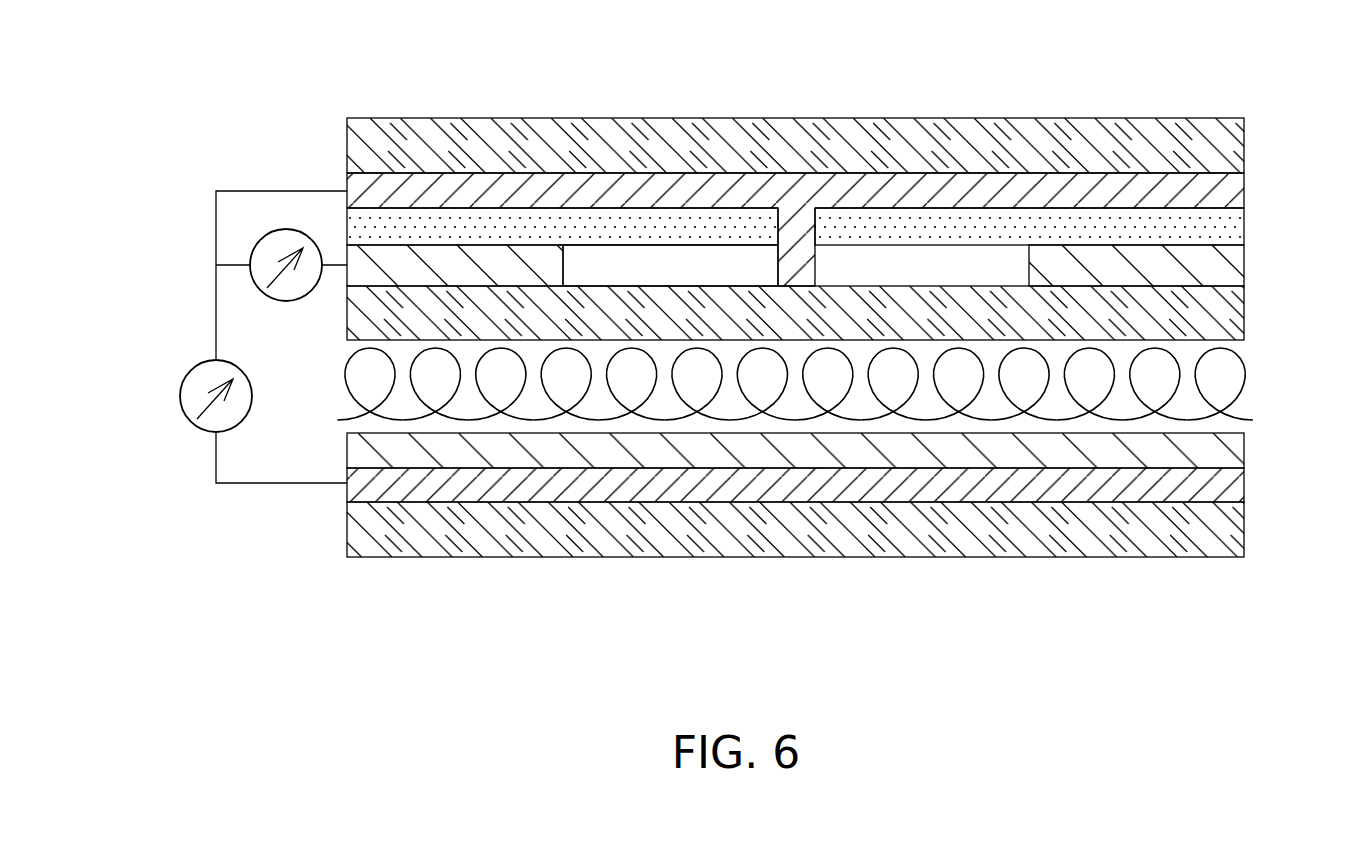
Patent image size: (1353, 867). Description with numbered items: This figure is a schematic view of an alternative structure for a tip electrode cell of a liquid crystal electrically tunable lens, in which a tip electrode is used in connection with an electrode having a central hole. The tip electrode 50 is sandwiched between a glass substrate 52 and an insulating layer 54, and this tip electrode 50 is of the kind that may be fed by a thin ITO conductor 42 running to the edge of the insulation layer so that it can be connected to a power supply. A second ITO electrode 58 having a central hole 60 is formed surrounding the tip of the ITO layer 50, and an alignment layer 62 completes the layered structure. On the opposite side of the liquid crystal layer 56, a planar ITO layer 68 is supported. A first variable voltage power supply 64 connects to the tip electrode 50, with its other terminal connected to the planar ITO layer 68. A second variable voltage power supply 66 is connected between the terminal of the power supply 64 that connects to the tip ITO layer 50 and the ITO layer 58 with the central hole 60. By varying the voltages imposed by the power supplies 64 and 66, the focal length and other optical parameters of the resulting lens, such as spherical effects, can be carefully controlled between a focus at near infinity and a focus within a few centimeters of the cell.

The ITO conductor 42 is at (755, 135).
The tip electrode 50 is at (925, 170).
The glass substrate 52 is at (1100, 130).
The insulating layer 54 is at (1205, 225).
The liquid crystal layer 56 is at (1246, 380).
The second ITO electrode 58 is at (447, 263).
The central hole 60 is at (567, 263).
The alignment layer 62 is at (1232, 318).
The first variable voltage power supply 64 is at (180, 397).
The second variable voltage power supply 66 is at (257, 242).
The planar ITO layer 68 is at (667, 535).